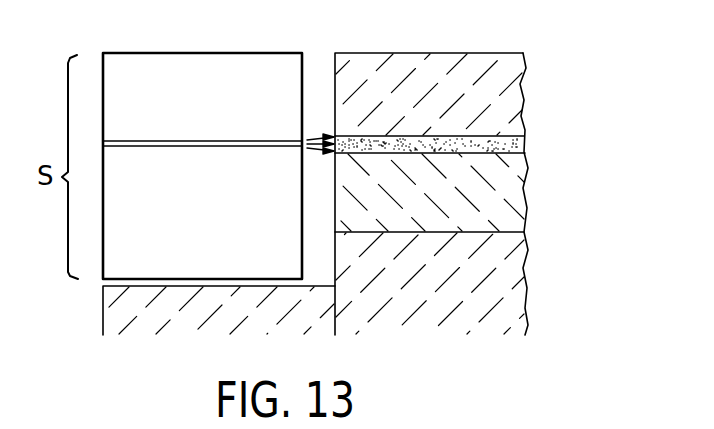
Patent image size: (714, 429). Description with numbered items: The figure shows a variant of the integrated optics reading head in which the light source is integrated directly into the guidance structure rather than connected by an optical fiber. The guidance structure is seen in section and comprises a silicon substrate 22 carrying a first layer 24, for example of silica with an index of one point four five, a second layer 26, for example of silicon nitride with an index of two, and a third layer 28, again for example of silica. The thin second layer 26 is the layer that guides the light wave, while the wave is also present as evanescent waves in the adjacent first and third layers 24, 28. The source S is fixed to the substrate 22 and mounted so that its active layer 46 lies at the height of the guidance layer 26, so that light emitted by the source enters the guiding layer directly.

The substrate 22 is at (475, 278).
The first layer 24 is at (490, 197).
The second layer 26 is at (480, 143).
The third layer 28 is at (470, 80).
The active layer 46 is at (144, 141).